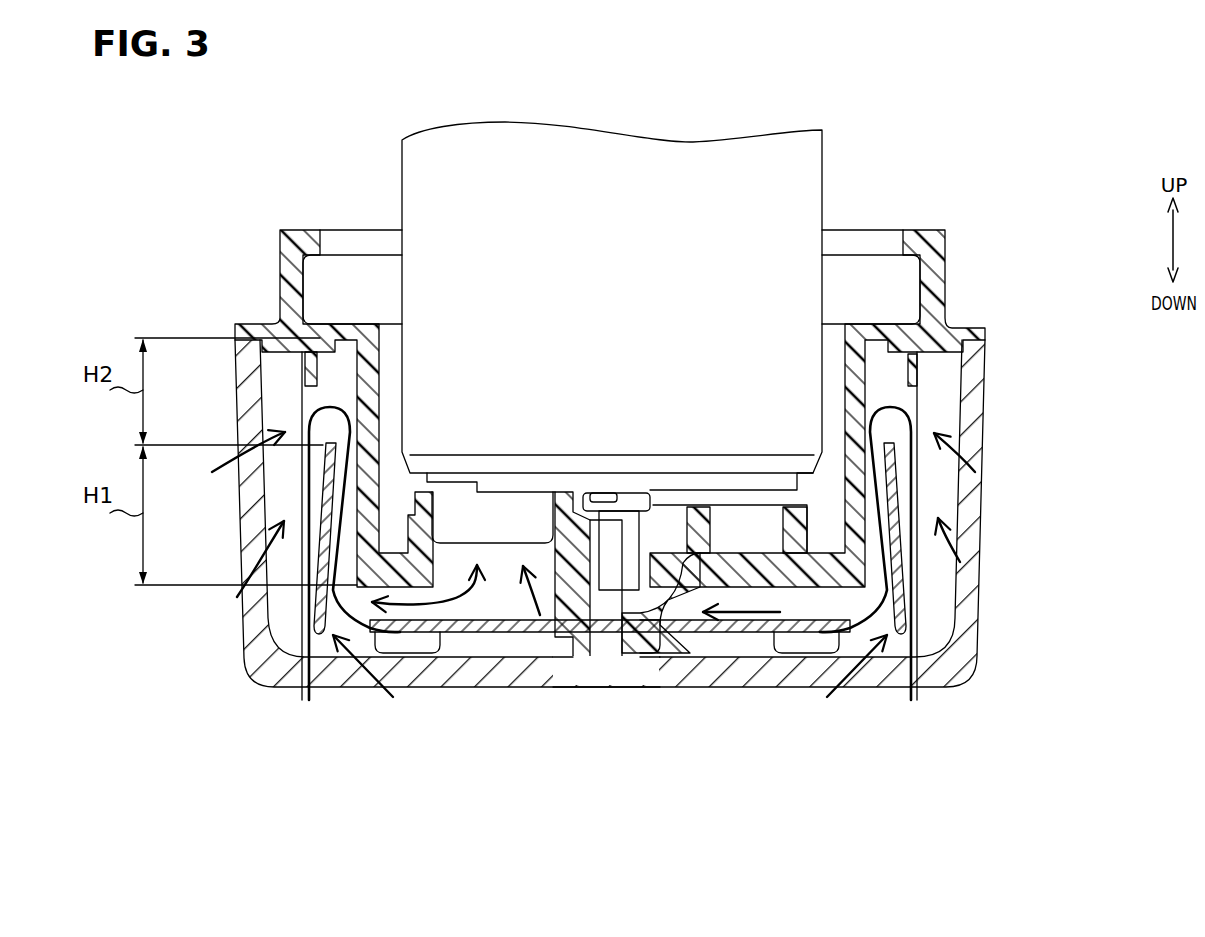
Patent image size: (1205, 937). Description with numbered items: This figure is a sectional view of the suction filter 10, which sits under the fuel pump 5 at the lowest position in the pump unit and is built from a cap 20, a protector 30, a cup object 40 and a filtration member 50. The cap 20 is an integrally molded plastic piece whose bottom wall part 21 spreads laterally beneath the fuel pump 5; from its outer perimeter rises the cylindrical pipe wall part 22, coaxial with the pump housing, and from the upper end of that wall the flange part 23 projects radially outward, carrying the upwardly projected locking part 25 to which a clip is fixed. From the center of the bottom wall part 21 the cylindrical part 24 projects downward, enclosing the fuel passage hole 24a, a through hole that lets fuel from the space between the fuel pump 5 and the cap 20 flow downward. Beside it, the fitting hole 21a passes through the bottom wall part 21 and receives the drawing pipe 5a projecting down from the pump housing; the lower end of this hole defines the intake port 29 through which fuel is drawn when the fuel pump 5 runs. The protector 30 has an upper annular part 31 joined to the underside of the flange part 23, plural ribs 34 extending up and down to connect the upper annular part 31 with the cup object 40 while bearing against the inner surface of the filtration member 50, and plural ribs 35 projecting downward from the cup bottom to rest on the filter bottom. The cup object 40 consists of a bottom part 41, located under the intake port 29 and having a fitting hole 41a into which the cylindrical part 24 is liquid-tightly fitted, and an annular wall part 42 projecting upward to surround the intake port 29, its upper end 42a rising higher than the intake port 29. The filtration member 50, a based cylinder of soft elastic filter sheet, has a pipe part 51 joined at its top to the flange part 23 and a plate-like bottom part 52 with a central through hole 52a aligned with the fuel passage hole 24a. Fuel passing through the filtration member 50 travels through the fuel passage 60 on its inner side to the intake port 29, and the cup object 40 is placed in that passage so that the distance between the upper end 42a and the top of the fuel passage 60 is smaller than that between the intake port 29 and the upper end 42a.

The fuel pump 5 is at (798, 158).
The drawing pipe 5a is at (498, 510).
The suction filter 10 is at (210, 296).
The cap 20 is at (278, 274).
The bottom wall part 21 is at (728, 657).
The fitting hole 21a is at (553, 557).
The pipe wall part 22 is at (858, 408).
The flange part 23 is at (960, 336).
The cylindrical part 24 is at (630, 663).
The fuel passage hole 24a is at (606, 670).
The locking part 25 is at (933, 277).
The intake port 29 is at (500, 657).
The protector 30 is at (288, 406).
The upper annular part 31 is at (914, 375).
The ribs 34 is at (937, 507).
The ribs 35 is at (462, 650).
The cup object 40 is at (895, 543).
The bottom part 41 is at (805, 633).
The fitting hole 41a is at (587, 657).
The annular wall part 42 is at (895, 580).
The upper end 42a is at (935, 436).
The filtration member 50 is at (974, 646).
The pipe part 51 is at (262, 412).
The bottom part 52 is at (875, 678).
The through hole 52a is at (647, 675).
The fuel passage 60 is at (282, 506).